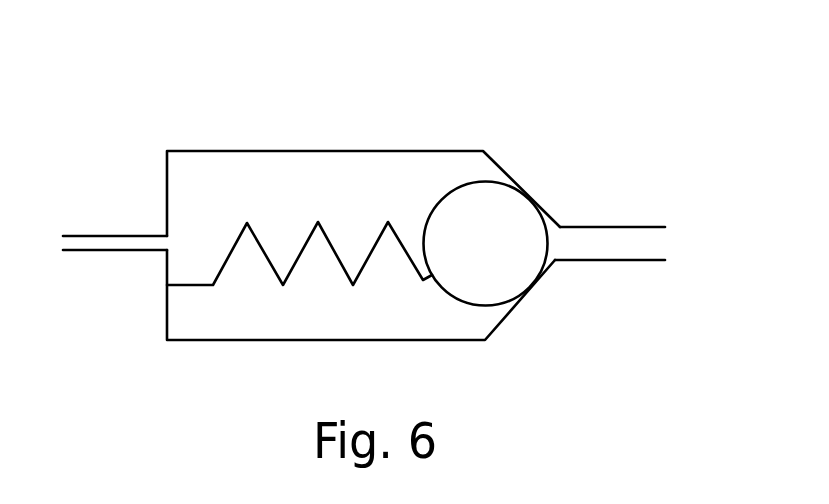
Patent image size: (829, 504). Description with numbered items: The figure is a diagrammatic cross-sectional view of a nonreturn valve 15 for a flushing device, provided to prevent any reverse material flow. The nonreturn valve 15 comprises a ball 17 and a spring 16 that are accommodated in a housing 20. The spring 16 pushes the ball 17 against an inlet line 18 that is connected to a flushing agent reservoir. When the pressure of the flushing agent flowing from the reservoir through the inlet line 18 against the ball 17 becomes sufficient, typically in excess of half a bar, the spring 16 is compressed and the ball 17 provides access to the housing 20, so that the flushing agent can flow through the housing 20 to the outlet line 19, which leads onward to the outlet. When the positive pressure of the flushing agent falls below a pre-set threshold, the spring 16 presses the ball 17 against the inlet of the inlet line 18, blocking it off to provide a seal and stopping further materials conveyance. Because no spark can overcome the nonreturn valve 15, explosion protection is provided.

The nonreturn valve 15 is at (551, 309).
The spring 16 is at (267, 262).
The ball 17 is at (519, 223).
The inlet line 18 is at (643, 226).
The outlet line 19 is at (110, 250).
The housing 20 is at (353, 168).